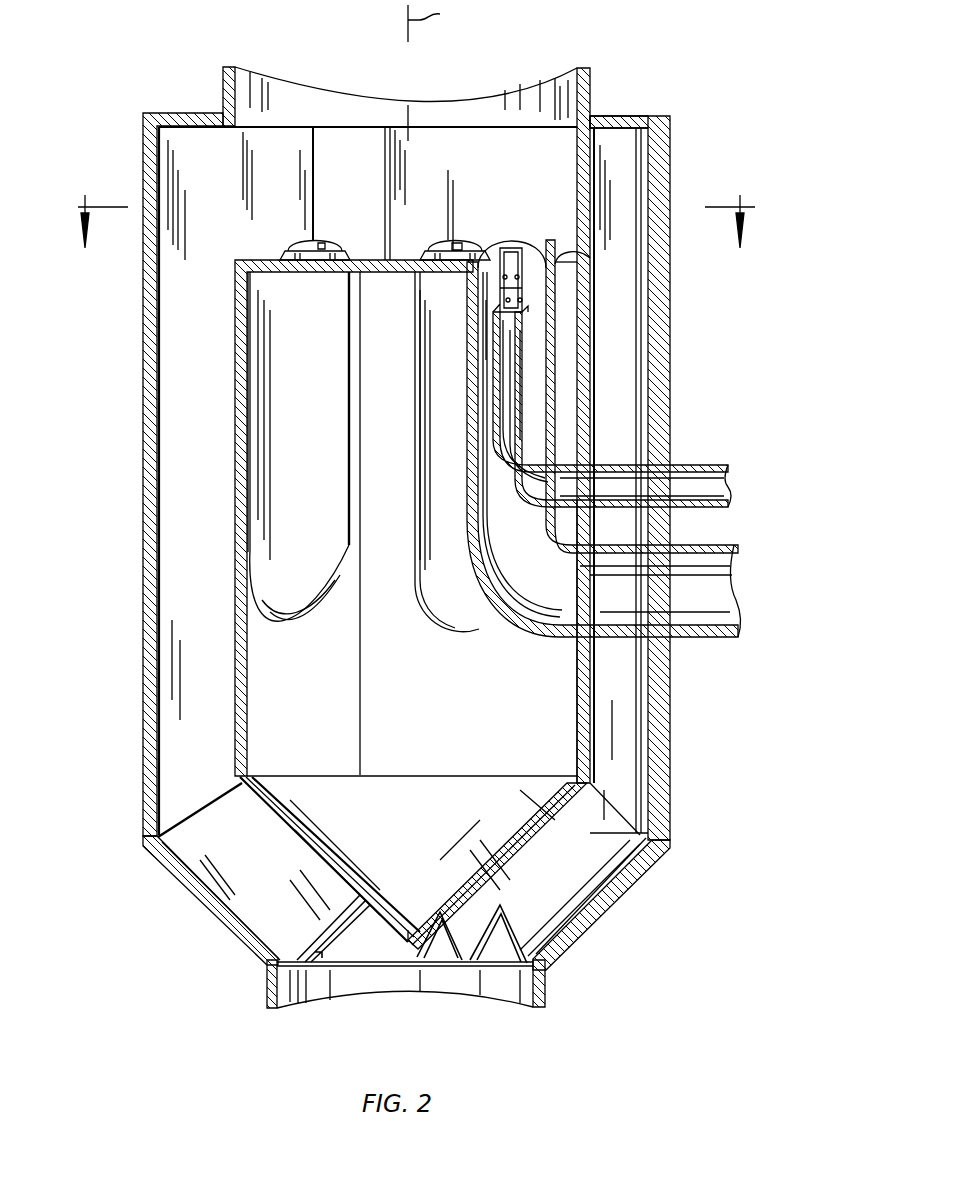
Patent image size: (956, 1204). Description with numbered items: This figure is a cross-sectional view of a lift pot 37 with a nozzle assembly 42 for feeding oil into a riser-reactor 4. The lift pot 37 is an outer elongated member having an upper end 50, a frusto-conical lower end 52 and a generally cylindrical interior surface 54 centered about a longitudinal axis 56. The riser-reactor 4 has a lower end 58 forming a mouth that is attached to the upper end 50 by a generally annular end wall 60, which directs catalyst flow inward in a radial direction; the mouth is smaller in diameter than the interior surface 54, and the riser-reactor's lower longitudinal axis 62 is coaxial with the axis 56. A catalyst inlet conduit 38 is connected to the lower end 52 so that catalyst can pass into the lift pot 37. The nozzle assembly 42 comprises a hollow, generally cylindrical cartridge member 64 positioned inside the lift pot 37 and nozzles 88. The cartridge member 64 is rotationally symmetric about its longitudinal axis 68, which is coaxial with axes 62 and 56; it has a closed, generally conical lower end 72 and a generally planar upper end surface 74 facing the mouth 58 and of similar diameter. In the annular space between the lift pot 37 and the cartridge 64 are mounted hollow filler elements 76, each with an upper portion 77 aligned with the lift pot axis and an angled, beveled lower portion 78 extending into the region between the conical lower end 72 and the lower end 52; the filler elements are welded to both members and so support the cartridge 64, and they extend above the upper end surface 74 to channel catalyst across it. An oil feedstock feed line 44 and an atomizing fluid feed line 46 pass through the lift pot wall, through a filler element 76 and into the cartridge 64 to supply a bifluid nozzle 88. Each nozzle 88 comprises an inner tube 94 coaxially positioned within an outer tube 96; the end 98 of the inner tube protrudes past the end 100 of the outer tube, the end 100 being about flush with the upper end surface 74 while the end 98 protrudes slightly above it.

The riser-reactor 4 is at (677, 55).
The lift pot 37 is at (665, 692).
The catalyst inlet conduit 38 is at (547, 988).
The nozzle assembly 42 is at (232, 348).
The oil feedstock feed line 44 is at (728, 470).
The atomizing fluid feed line 46 is at (716, 615).
The upper end of lift pot 50 is at (594, 120).
The lower end of lift pot 52 is at (668, 853).
The interior surface 54 is at (642, 668).
The longitudinal axis of lift pot 56 is at (408, 118).
The lower end of riser-reactor 58 is at (590, 74).
The end wall 60 is at (655, 118).
The longitudinal axis of riser-reactor 62 is at (437, 22).
The cartridge member 64 is at (234, 290).
The longitudinal axis of cartridge member 68 is at (408, 386).
The lower end of cartridge member 72 is at (282, 826).
The upper end surface 74 is at (255, 262).
The filler element 76 is at (192, 420).
The upper portion of filler element 77 is at (188, 150).
The lower portion of filler element 78 is at (194, 858).
The nozzle 88 is at (321, 242).
The inner tube 94 is at (548, 366).
The outer tube 96 is at (547, 402).
The end of inner tube 98 is at (538, 260).
The end of outer tube 100 is at (550, 264).